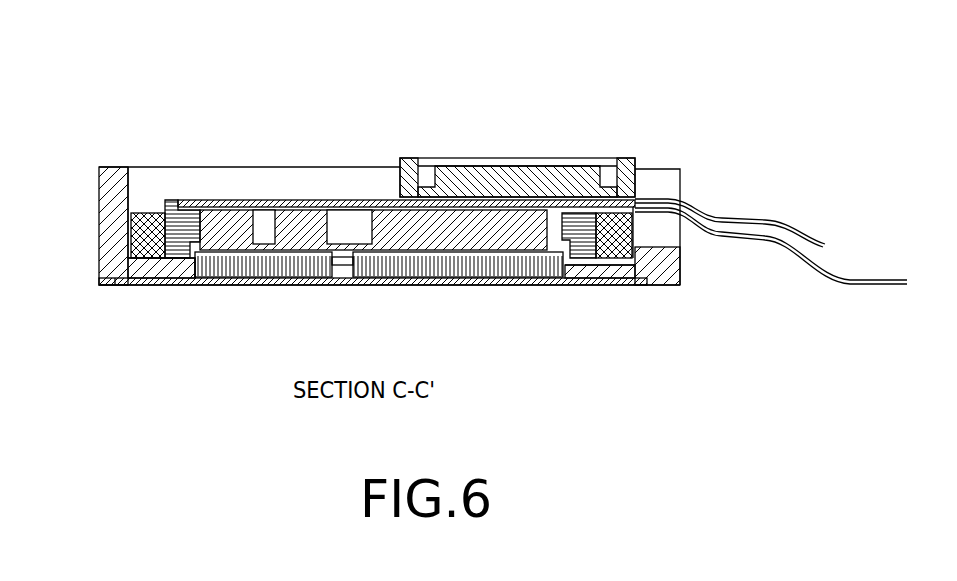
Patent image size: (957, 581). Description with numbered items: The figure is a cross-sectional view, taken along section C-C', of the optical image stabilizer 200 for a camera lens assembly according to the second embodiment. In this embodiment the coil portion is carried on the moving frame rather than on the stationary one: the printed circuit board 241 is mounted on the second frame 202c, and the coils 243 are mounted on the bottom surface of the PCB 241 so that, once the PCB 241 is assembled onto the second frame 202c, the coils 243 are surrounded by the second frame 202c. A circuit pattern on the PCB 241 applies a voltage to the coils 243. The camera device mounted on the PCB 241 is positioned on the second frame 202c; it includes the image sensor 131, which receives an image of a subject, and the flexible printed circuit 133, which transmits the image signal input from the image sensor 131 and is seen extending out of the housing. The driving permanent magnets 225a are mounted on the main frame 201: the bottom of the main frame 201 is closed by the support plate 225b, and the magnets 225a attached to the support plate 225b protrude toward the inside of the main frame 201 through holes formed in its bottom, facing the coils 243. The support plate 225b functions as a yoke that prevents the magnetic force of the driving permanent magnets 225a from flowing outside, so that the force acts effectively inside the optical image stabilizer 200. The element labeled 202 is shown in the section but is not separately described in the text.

The optical image stabilizer 200 is at (680, 22).
The main frame 201 is at (95, 228).
The magnet 202 is at (148, 243).
The second frame 202c is at (172, 200).
The driving permanent magnets 225a is at (287, 262).
The support plate 225b is at (580, 284).
The printed circuit board 241 is at (352, 202).
The coils 243 is at (243, 212).
The image sensor 131 is at (520, 185).
The flexible printed circuit 133 is at (742, 218).